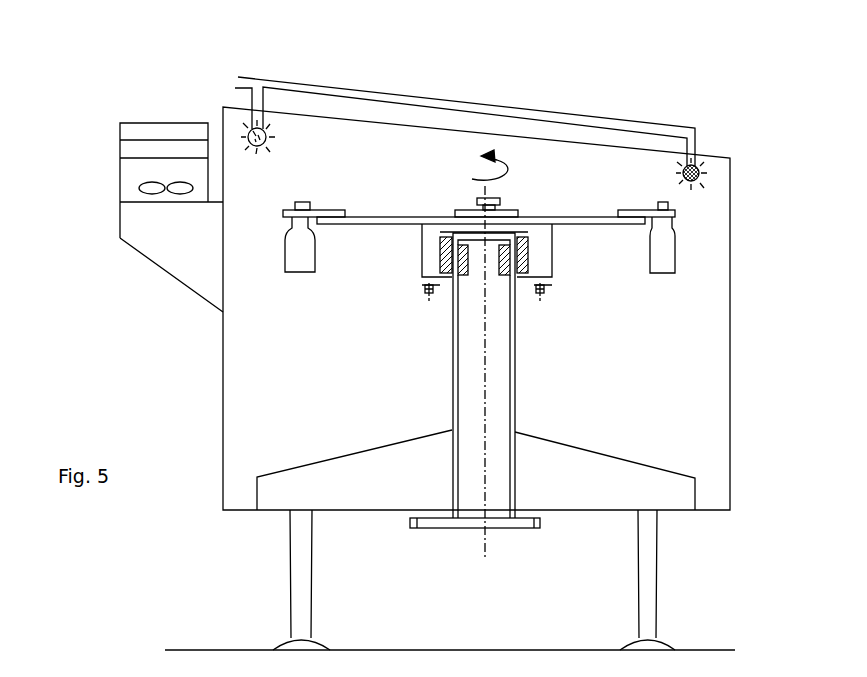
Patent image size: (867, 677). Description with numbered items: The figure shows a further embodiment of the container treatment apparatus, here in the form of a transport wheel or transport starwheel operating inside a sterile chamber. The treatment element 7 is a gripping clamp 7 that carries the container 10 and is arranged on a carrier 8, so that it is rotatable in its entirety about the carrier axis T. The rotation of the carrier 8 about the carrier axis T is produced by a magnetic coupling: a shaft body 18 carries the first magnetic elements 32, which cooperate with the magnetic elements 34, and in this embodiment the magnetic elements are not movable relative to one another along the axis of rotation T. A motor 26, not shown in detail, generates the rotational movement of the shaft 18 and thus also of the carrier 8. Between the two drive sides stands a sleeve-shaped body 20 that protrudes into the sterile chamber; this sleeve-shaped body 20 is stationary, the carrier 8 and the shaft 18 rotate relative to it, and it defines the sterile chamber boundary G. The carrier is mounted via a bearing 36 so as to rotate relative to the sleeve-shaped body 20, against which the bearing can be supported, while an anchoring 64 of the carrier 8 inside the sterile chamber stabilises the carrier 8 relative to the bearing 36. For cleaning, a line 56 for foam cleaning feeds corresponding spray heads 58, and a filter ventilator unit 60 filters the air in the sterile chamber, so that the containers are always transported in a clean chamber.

The treatment element 7 is at (647, 208).
The carrier 8 is at (590, 224).
The container 10 is at (667, 250).
The shaft body 18 is at (497, 348).
The sleeve-shaped body 20 is at (452, 350).
The motor 26 is at (507, 528).
The first magnetic elements 32 is at (508, 278).
The magnetic elements 34 is at (530, 250).
The bearing 36 is at (506, 263).
The line for foam cleaning 56 is at (405, 103).
The spray heads 58 is at (260, 143).
The filter ventilator unit 60 is at (170, 197).
The anchoring 64 is at (546, 285).
The sterile chamber boundary G is at (452, 325).
The carrier axis T is at (470, 377).